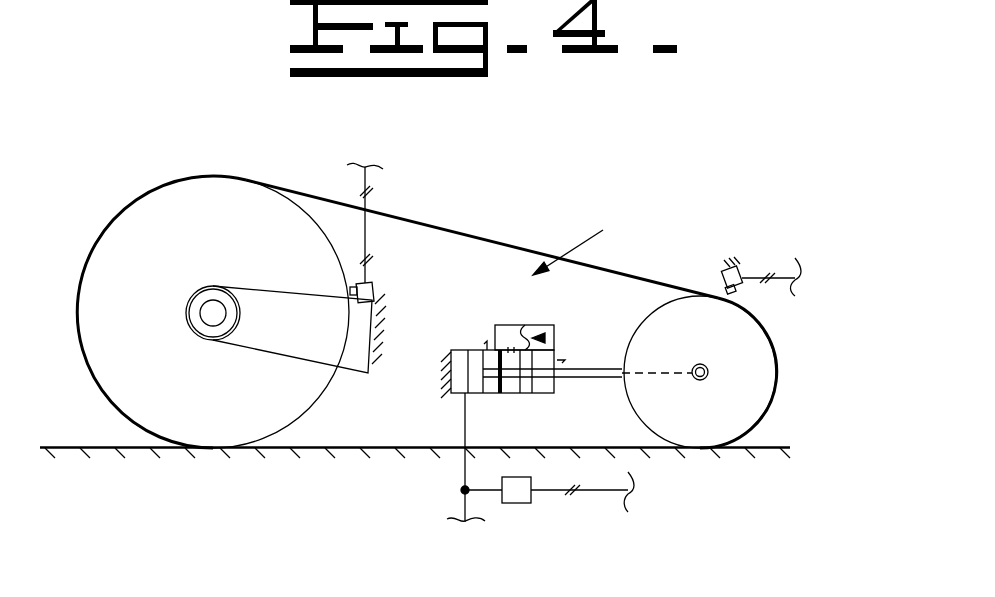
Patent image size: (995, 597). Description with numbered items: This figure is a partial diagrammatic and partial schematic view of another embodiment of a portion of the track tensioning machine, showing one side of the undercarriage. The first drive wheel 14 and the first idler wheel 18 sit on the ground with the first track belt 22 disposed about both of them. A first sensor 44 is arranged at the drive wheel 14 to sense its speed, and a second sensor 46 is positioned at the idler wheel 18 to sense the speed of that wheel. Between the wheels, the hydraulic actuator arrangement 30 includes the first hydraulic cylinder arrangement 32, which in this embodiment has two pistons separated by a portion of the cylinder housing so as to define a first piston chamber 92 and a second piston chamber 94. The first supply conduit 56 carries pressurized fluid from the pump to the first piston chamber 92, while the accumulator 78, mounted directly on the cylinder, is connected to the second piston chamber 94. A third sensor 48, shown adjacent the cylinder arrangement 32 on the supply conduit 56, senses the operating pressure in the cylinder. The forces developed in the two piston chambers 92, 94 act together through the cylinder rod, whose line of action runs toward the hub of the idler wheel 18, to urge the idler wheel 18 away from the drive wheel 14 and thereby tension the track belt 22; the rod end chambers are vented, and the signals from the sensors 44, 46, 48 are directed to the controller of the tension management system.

The first drive wheel 14 is at (229, 259).
The first idler wheel 18 is at (717, 344).
The first track belt 22 is at (442, 227).
The hydraulic actuator arrangement 30 is at (582, 243).
The first hydraulic cylinder arrangement 32 is at (468, 350).
The first sensor 44 is at (373, 287).
The second sensor 46 is at (740, 287).
The third sensor 48 is at (531, 502).
The first supply conduit 56 is at (465, 470).
The first accumulator 78 is at (530, 325).
The first piston chamber 92 is at (457, 372).
The second piston chamber 94 is at (507, 386).